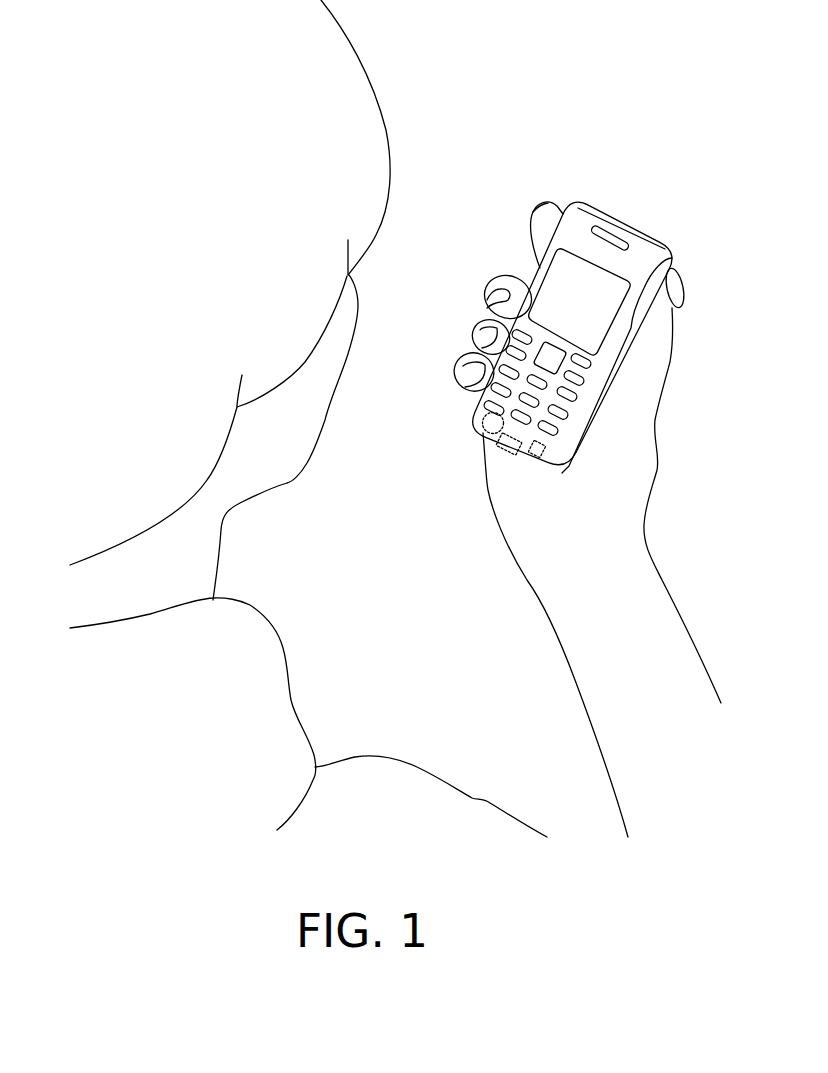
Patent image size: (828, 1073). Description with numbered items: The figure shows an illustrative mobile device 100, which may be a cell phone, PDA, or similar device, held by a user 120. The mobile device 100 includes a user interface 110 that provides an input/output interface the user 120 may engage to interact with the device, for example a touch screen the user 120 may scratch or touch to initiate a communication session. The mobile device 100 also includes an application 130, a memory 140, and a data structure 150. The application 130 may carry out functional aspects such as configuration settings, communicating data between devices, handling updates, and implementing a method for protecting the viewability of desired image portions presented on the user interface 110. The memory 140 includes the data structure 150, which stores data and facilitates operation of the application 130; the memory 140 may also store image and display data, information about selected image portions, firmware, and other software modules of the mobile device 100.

The mobile device 100 is at (563, 347).
The user interface 110 is at (539, 267).
The user 120 is at (415, 131).
The application 130 is at (483, 431).
The memory 140 is at (510, 445).
The data structure 150 is at (530, 457).